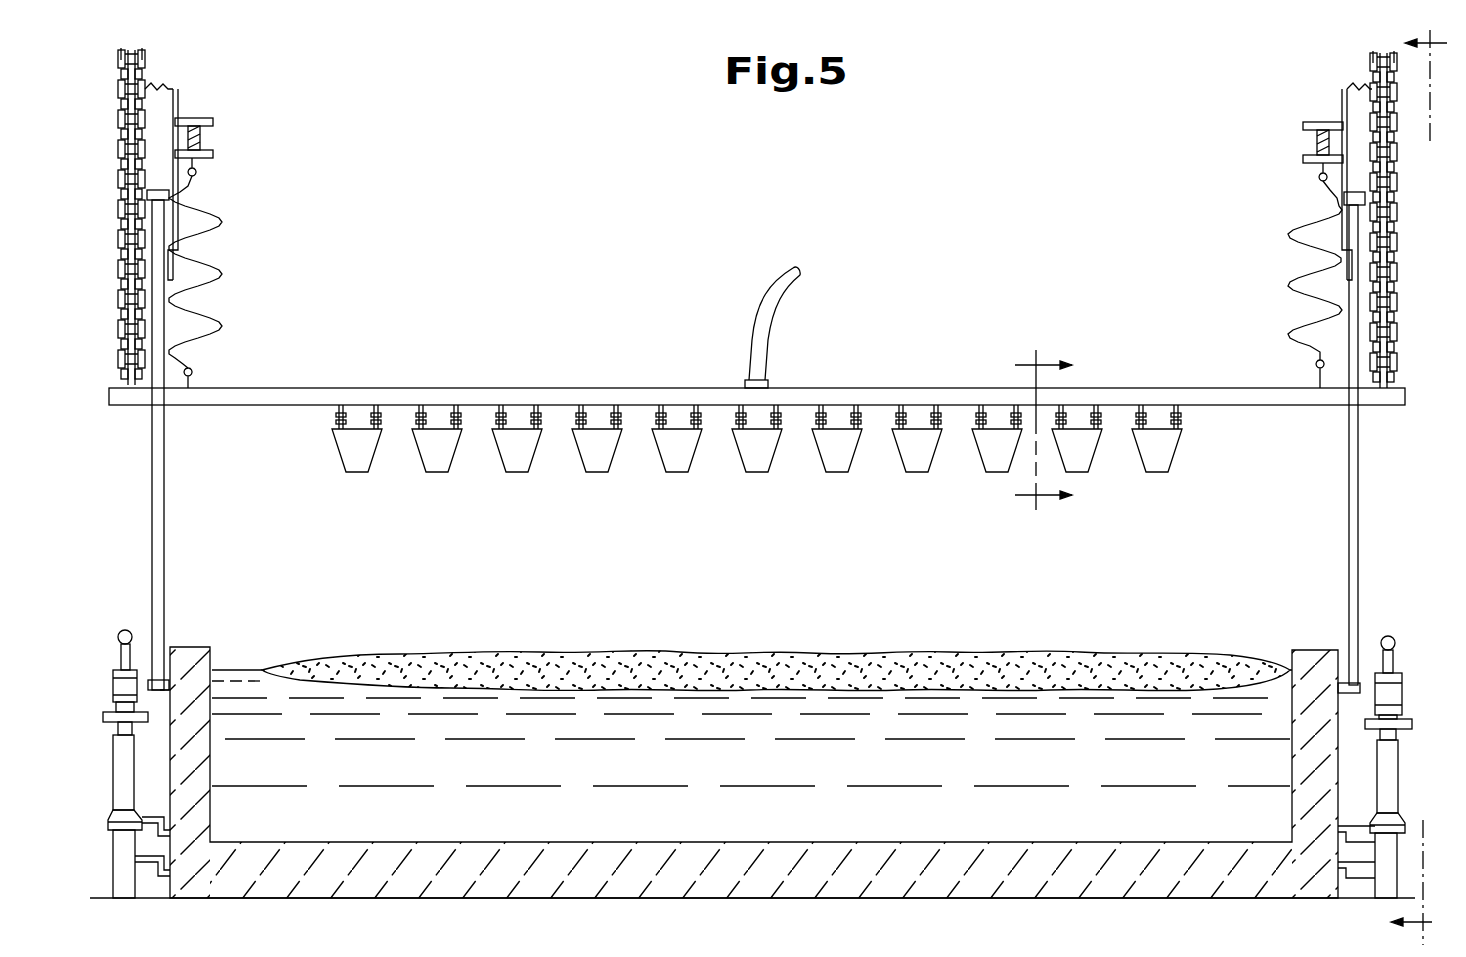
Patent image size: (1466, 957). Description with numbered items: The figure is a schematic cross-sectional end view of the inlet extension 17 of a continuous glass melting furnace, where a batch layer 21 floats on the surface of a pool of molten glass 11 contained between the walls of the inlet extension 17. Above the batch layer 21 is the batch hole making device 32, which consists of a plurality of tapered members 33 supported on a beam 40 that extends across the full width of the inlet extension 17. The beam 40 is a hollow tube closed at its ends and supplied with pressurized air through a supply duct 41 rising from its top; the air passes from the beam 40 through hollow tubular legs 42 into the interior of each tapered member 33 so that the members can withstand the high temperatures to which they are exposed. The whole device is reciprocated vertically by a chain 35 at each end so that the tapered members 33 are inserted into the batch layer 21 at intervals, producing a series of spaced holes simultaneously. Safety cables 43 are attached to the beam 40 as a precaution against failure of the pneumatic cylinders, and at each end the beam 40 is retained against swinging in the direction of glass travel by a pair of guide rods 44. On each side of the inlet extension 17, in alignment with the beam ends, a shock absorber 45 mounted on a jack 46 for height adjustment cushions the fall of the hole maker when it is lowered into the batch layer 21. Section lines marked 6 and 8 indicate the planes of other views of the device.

The chain 35 is at (118, 233).
The safety cables 43 is at (222, 221).
The batch hole making device 32 is at (672, 330).
The supply duct 41 is at (785, 299).
The beam 40 is at (481, 395).
The hollow tubular legs 42 is at (590, 421).
The tapered members 33 is at (752, 472).
The guide rods 44 is at (152, 555).
The shock absorber 45 is at (122, 658).
The jack 46 is at (120, 773).
The pool of molten glass 11 is at (244, 670).
The batch layer 21 is at (1036, 653).
The inlet extension 17 is at (1320, 652).
The section line 6- 6 is at (1032, 431).
The section line 8- 8 is at (1426, 487).